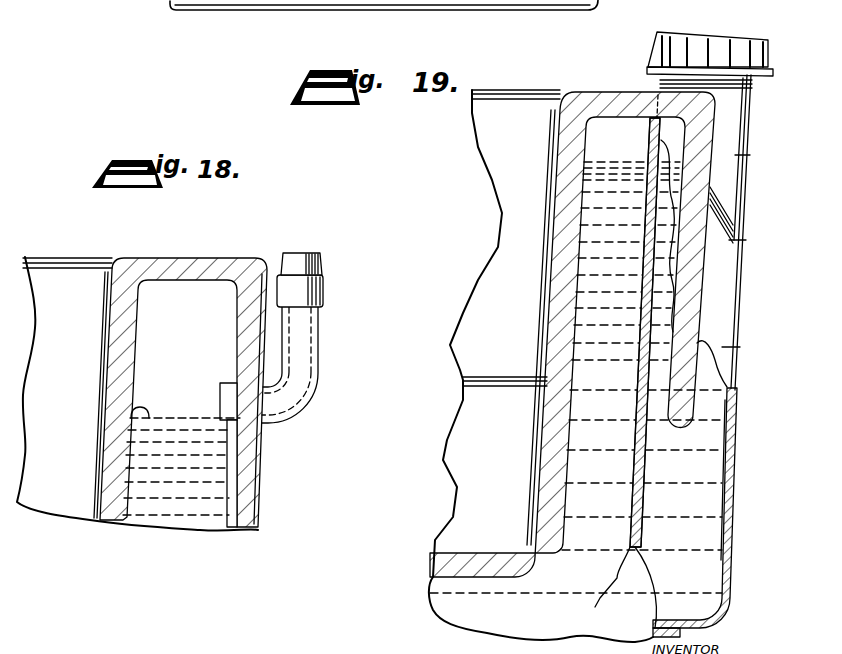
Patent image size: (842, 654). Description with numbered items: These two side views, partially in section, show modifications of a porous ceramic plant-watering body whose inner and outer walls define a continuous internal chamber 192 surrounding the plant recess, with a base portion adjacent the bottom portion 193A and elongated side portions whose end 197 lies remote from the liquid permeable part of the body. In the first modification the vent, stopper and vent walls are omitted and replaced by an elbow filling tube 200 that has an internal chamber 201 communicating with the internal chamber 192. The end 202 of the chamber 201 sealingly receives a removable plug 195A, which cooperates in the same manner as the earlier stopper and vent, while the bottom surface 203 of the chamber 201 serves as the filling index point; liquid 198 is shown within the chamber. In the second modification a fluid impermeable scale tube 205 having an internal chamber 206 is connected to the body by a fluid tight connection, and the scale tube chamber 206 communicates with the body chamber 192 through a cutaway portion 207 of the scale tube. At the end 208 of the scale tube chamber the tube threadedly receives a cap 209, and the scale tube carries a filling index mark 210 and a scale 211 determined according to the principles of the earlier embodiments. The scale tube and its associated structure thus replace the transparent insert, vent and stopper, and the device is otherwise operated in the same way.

In FIG. 18, the internal chamber 192 is at (224, 476).
In FIG. 19, the internal chamber 192 is at (568, 472).
In FIG. 19, the bottom portion 193A is at (485, 12).
In FIG. 18, the removable plug 195A is at (313, 244).
In FIG. 18, the end of the elongated side portions 197 is at (190, 280).
In FIG. 18, the liquid level indicator 198 is at (133, 409).
In FIG. 18, the elbow filling tube 200 is at (320, 349).
In FIG. 18, the internal chamber 201 is at (312, 372).
In FIG. 18, the end of the chamber 202 is at (303, 316).
In FIG. 18, the bottom surface 203 is at (218, 416).
In FIG. 19, the scale tube 205 is at (736, 413).
In FIG. 19, the internal chamber 206 is at (720, 440).
In FIG. 19, the cutaway portion 207 is at (623, 552).
In FIG. 19, the end of the scale tube chamber 208 is at (652, 145).
In FIG. 19, the cap 209 is at (700, 43).
In FIG. 19, the filling index mark 210 is at (743, 153).
In FIG. 19, the scale 211 is at (748, 230).